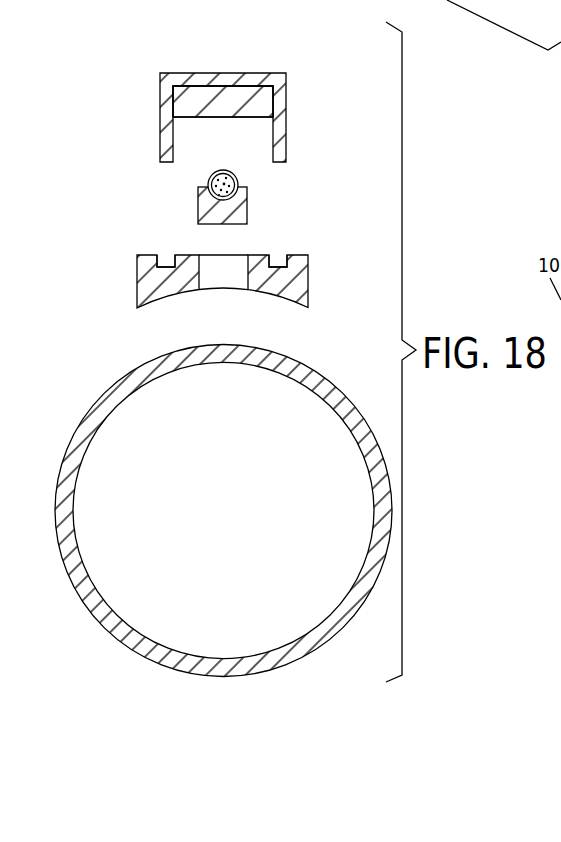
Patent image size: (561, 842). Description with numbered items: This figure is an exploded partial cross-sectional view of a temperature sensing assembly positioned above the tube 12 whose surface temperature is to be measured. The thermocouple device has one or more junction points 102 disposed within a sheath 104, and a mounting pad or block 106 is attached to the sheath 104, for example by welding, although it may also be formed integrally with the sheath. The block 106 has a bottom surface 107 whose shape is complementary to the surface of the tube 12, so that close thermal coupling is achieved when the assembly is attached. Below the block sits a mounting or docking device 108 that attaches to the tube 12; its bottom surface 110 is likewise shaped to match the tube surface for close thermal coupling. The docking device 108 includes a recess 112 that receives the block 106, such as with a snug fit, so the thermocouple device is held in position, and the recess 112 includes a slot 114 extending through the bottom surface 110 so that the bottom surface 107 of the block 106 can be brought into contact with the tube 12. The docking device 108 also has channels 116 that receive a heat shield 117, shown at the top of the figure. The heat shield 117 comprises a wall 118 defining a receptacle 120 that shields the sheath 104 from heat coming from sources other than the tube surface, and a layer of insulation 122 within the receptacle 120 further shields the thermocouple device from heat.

The tube 12 is at (103, 390).
The junction point 102 is at (238, 183).
The sheath 104 is at (216, 173).
The mounting pad or block 106 is at (210, 252).
The bottom surface 107 is at (226, 225).
The mounting or docking device 108 is at (137, 280).
The bottom surface 110 is at (287, 305).
The recess 112 is at (206, 247).
The slot 114 is at (213, 282).
The channels 116 is at (168, 257).
The heat shield 117 is at (256, 50).
The wall 118 is at (161, 116).
The receptacle 120 is at (233, 133).
The layer of insulation 122 is at (266, 106).